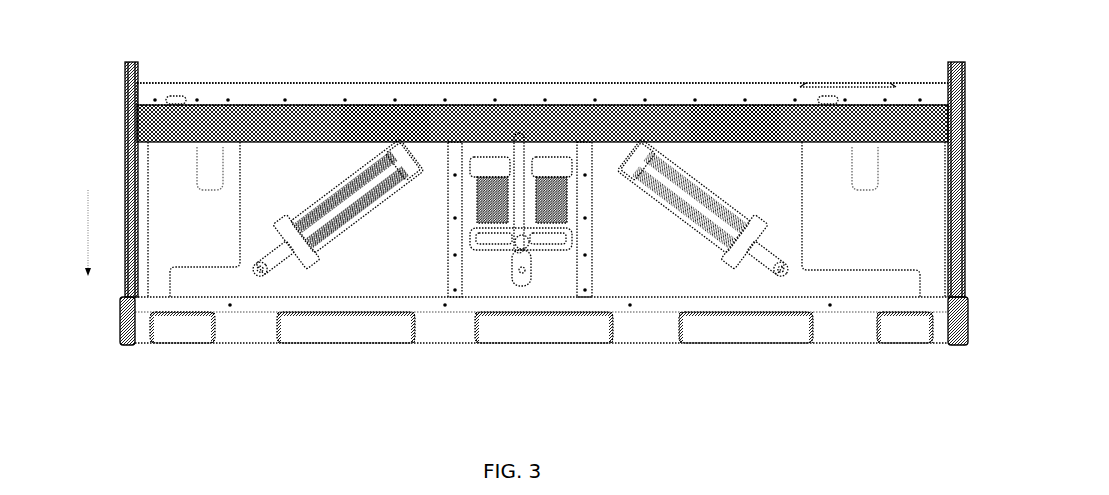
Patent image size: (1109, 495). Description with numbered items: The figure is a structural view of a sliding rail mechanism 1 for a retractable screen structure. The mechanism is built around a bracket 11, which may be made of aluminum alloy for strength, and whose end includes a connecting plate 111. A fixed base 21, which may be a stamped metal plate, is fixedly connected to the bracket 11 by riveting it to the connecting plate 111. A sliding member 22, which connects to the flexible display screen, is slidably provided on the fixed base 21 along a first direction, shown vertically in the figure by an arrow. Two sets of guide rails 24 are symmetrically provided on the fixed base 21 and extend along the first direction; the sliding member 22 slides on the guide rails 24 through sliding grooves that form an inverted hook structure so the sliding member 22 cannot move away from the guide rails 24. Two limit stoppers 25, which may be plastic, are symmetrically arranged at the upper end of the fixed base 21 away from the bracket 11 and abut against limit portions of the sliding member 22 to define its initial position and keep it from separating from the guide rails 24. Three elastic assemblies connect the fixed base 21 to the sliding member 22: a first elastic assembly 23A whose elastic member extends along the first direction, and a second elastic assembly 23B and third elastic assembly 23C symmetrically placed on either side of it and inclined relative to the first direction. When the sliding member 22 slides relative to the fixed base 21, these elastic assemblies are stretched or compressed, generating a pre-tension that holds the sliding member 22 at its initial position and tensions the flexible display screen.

The sliding rail mechanism 1 is at (817, 52).
The bracket 11 is at (126, 167).
The connecting plate 111 is at (522, 93).
The fixed base 21 is at (382, 273).
The sliding member 22 is at (313, 120).
The first elastic assembly 23A is at (557, 212).
The second elastic assembly 23B is at (330, 213).
The third elastic assembly 23C is at (727, 216).
The guide rail 24 is at (455, 167).
The limit stopper 25 is at (375, 107).